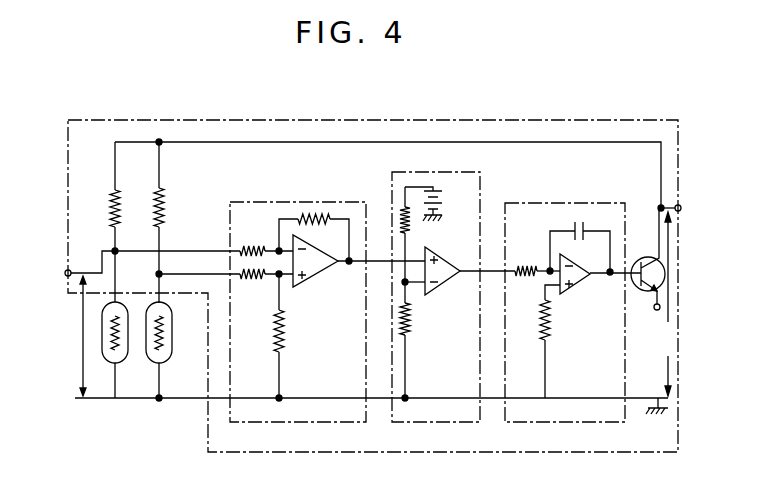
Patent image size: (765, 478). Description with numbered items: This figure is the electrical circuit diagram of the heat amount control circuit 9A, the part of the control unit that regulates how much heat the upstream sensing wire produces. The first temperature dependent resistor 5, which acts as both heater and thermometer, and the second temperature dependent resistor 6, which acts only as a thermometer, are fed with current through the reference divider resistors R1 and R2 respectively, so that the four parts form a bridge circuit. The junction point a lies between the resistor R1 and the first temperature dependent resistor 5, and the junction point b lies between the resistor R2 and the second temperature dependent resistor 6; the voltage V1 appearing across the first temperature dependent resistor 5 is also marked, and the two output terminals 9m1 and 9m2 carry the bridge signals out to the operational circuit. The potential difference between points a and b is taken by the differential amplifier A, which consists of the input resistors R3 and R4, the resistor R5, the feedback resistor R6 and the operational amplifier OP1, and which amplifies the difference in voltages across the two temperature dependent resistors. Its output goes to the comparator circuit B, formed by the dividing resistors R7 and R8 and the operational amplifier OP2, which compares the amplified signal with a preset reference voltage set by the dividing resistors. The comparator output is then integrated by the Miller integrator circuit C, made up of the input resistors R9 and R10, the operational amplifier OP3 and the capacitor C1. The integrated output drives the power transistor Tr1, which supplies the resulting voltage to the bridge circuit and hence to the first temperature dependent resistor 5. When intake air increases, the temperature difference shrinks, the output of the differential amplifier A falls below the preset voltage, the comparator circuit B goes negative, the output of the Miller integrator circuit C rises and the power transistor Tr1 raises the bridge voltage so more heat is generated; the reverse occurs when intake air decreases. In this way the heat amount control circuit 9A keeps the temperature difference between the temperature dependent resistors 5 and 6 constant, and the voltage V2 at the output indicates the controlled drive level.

The heat amount control circuit 9A is at (222, 118).
The output terminal 9m1 is at (680, 213).
The output terminal 9m2 is at (66, 276).
The first temperature dependent resistor 5 is at (111, 366).
The second temperature dependent resistor 6 is at (152, 366).
The junction point a is at (113, 249).
The junction point b is at (157, 274).
The reference divider resistor R1 is at (110, 208).
The reference divider resistor R2 is at (164, 206).
The input resistor R3 is at (251, 248).
The input resistor R4 is at (257, 280).
The resistor R5 is at (286, 334).
The feedback resistor R6 is at (320, 214).
The dividing resistor R7 is at (400, 215).
The dividing resistor R8 is at (410, 326).
The input resistor R9 is at (526, 266).
The input resistor R10 is at (550, 326).
The operational amplifier OP1 is at (322, 280).
The operational amplifier OP2 is at (450, 286).
The operational amplifier OP3 is at (584, 284).
The capacitor C1 is at (579, 222).
The power transistor Tr1 is at (665, 284).
The differential amplifier A is at (333, 424).
The comparator circuit B is at (453, 424).
The Miller integrator circuit C is at (585, 424).
The voltage V1 is at (68, 333).
The output voltage V2 is at (672, 333).